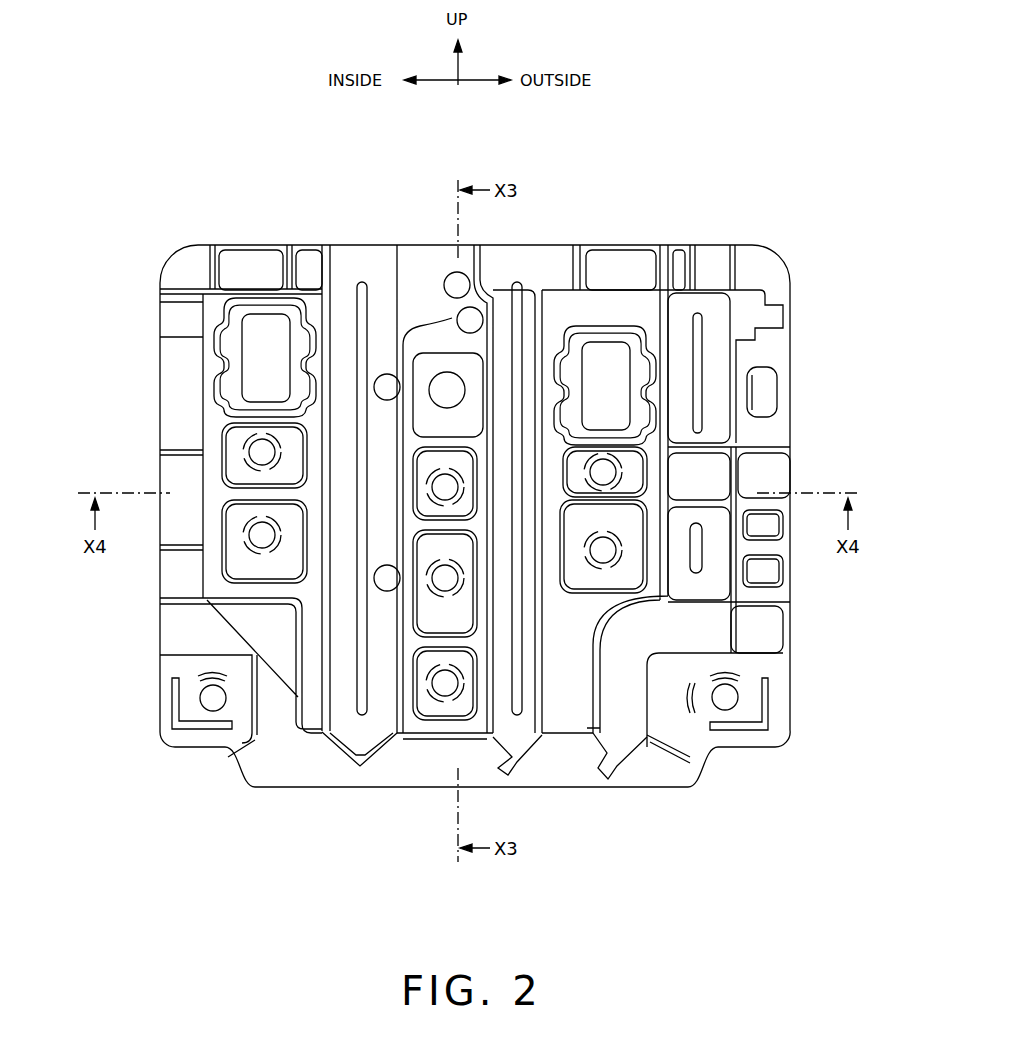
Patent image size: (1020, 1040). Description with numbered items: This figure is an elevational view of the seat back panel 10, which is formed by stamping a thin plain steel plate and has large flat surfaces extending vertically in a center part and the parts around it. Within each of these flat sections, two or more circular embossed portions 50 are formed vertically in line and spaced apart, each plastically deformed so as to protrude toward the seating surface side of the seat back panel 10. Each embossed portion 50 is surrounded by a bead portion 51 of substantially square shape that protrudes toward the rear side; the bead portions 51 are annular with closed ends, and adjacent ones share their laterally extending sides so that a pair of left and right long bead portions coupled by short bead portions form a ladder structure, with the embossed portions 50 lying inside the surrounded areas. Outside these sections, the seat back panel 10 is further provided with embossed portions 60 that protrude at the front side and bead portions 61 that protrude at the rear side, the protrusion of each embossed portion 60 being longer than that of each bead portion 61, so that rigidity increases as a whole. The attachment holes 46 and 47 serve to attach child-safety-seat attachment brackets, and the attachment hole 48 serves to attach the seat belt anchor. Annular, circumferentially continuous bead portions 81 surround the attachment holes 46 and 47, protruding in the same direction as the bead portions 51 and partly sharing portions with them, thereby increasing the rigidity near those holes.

The seat back panel 10 is at (707, 155).
The attachment hole 46 is at (605, 355).
The attachment hole 47 is at (263, 325).
The attachment hole 48 is at (440, 385).
The embossed portion 50 is at (262, 452).
The bead portion 51 is at (238, 470).
The embossed portion 60 is at (387, 383).
The bead portion 61 is at (360, 325).
The bead portion 81 is at (222, 327).